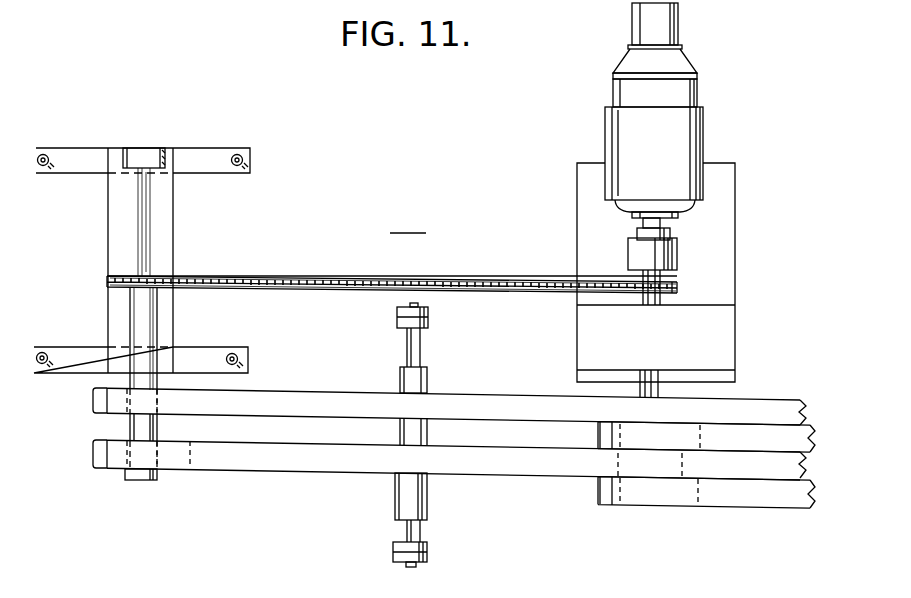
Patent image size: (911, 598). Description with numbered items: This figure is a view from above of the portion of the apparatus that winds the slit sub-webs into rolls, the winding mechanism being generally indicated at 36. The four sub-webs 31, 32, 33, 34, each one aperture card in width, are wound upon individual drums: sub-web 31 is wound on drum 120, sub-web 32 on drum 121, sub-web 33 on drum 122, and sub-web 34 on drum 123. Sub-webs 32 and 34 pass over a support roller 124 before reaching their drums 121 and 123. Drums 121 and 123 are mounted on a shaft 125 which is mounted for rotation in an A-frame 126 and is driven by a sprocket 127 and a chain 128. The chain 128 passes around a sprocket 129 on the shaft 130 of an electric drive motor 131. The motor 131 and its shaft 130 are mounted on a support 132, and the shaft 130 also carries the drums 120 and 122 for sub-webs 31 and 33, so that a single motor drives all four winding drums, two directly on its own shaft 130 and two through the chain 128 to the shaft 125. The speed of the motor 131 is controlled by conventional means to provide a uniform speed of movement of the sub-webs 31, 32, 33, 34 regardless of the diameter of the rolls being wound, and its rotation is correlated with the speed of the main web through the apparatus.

The sub-web 31 is at (706, 493).
The sub-web 32 is at (712, 467).
The sub-web 33 is at (706, 438).
The sub-web 34 is at (786, 413).
The mechanism for rolling the sub-webs into rolls 36 is at (408, 223).
The drum 120 is at (600, 490).
The drum 121 is at (93, 459).
The drum 122 is at (612, 437).
The drum 123 is at (93, 406).
The support roller 124 is at (428, 496).
The shaft 125 is at (158, 302).
The A-frame 126 is at (175, 222).
The sprocket 127 is at (150, 277).
The chain 128 is at (462, 279).
The sprocket 129 is at (679, 289).
The shaft 130 is at (678, 272).
The electric drive motor 131 is at (686, 142).
The support 132 is at (737, 200).